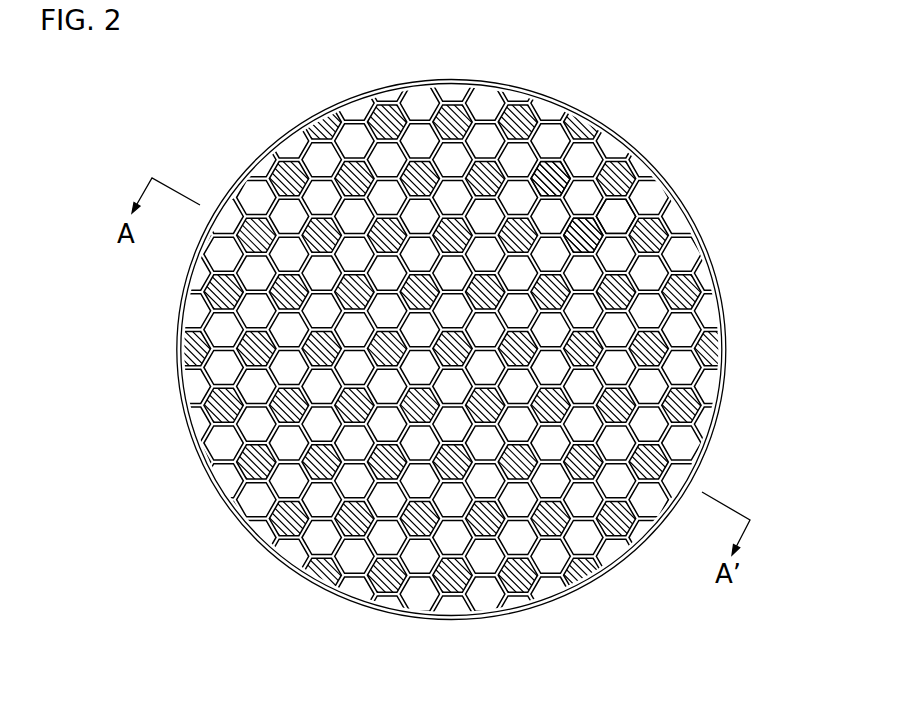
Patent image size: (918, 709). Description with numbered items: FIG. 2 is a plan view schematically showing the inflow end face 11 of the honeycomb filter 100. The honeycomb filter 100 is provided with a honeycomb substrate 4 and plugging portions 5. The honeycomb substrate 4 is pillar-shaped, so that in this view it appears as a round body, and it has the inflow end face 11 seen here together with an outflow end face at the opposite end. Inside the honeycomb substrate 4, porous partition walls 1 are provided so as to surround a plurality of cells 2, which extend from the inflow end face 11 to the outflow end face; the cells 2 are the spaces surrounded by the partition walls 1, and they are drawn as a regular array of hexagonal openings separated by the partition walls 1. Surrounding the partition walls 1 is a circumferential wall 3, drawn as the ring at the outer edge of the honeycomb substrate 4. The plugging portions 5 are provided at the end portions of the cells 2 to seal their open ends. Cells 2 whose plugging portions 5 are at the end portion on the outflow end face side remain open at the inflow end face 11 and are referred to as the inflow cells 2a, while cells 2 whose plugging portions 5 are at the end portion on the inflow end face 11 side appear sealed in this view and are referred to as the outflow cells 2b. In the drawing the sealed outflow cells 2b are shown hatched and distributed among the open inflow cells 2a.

The honeycomb filter 100 is at (790, 65).
The partition walls 1 is at (603, 214).
The cells 2 is at (661, 202).
The inflow cells 2a is at (617, 262).
The outflow cells 2b is at (605, 216).
The circumferential wall 3 is at (688, 462).
The honeycomb substrate 4 is at (481, 104).
The plugging portions 5 is at (560, 182).
The inflow end face 11 is at (249, 151).